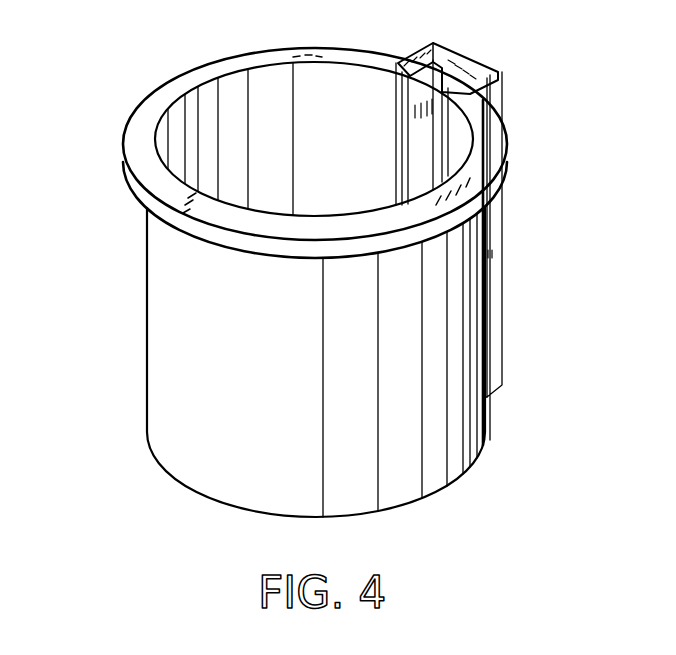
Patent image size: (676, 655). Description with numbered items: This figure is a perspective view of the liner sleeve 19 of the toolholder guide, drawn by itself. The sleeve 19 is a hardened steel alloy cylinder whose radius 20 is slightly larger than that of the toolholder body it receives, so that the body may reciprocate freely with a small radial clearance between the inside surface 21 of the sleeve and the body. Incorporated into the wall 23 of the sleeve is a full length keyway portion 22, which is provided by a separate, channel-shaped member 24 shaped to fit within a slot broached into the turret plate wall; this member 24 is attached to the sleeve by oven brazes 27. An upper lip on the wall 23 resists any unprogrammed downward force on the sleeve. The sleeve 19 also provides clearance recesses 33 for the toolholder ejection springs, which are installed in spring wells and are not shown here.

The liner sleeve 19 is at (440, 300).
The radius 20 is at (212, 126).
The inside surface 21 is at (257, 122).
The keyway portion 22 is at (483, 68).
The wall 23 is at (498, 185).
The channel-shaped member 24 is at (452, 60).
The oven brazes 27 is at (392, 113).
The clearance recesses 33 is at (287, 278).